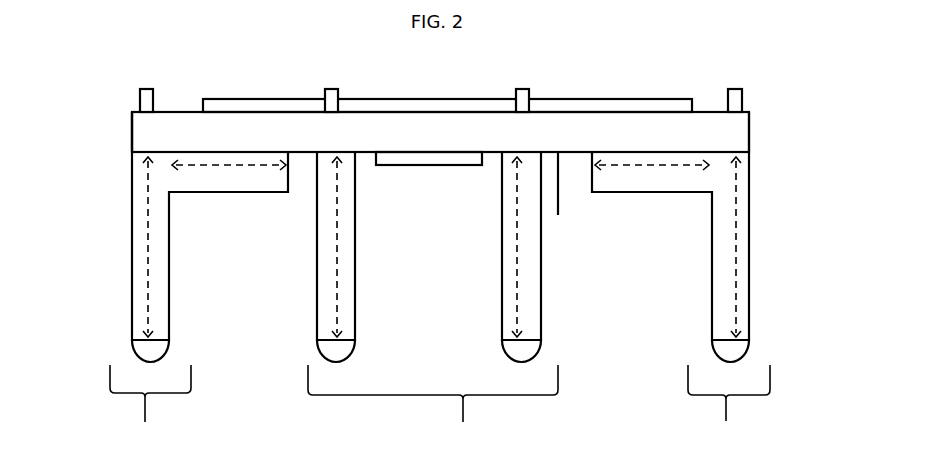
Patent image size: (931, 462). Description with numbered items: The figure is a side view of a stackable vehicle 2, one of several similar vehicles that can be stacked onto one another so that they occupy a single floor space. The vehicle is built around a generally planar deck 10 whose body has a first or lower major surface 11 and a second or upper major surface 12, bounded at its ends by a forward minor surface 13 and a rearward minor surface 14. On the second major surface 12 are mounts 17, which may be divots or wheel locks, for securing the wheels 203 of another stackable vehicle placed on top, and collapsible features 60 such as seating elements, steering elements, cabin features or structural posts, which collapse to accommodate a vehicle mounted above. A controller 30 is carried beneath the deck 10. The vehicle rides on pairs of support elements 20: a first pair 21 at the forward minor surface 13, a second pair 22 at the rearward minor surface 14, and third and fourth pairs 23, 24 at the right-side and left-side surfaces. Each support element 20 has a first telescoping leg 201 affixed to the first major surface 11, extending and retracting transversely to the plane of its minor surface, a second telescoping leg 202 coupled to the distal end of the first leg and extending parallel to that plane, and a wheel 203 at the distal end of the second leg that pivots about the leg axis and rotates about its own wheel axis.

The stackable vehicle 2 is at (129, 111).
The deck 10 is at (137, 147).
The first major surface 11 is at (560, 196).
The second major surface 12 is at (707, 110).
The forward minor surface 13 is at (752, 128).
The rearward minor surface 14 is at (130, 128).
The mounts 17 is at (326, 90).
The support elements 20 is at (131, 325).
The first telescoping leg 201 is at (222, 180).
The second telescoping leg 202 is at (321, 268).
The wheel 203 is at (327, 350).
The first pair of support elements 21 is at (729, 405).
The second pair of support elements 22 is at (150, 405).
The third pair of support elements 23 is at (433, 405).
The fourth pair of support elements 24 is at (433, 405).
The controller 30 is at (432, 158).
The collapsible features 60 is at (400, 97).